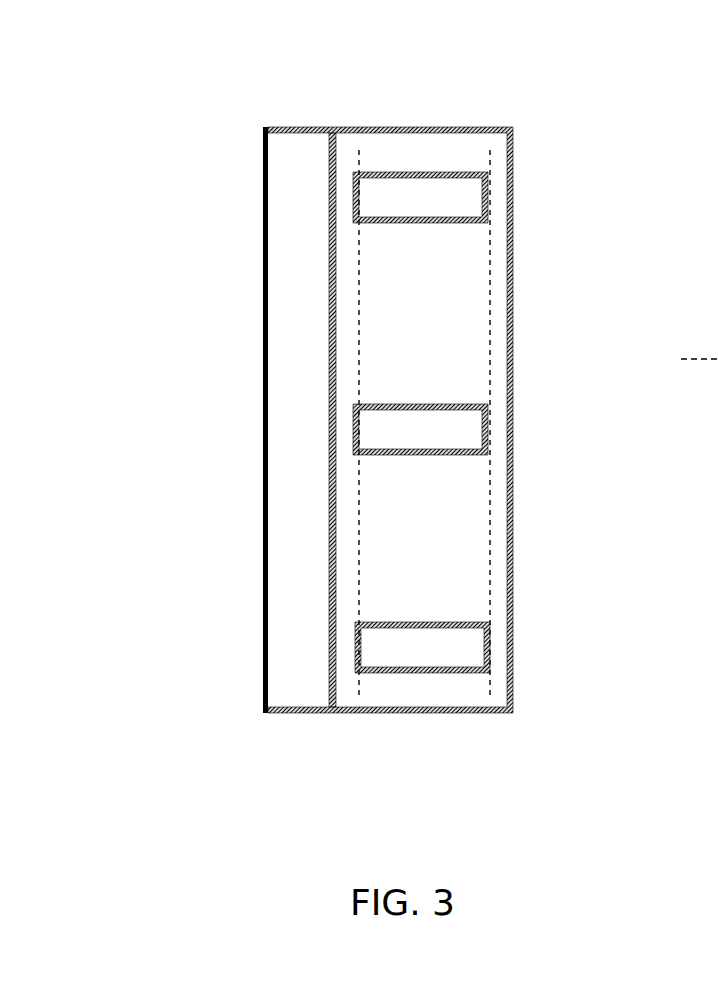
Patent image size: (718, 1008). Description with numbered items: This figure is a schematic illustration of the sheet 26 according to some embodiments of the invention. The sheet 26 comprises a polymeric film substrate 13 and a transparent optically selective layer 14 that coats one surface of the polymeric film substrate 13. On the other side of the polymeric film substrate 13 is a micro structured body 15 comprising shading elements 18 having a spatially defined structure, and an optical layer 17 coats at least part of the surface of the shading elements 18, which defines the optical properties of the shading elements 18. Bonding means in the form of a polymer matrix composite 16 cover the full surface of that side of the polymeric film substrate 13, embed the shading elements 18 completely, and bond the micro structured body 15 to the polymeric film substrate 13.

The sheet 26 is at (393, 97).
The transparent optically selective layer 14 is at (267, 277).
The polymeric film substrate 13 is at (297, 535).
The polymer matrix composite 16 is at (396, 327).
The micro structured body 15 is at (492, 183).
The optical layer 17 is at (483, 453).
The shading elements 18 is at (447, 647).